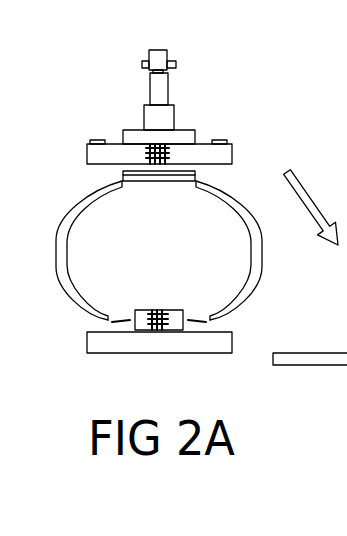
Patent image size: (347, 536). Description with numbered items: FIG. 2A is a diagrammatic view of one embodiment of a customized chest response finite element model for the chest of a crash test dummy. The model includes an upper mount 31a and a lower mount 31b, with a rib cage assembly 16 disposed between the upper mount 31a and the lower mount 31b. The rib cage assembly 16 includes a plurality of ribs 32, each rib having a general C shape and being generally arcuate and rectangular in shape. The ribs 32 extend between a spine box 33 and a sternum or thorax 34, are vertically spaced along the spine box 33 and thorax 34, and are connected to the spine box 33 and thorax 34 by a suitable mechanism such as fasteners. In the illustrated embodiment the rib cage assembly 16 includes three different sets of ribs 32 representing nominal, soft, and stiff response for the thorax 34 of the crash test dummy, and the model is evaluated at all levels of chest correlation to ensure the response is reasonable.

The rib cage assembly 16 is at (192, 216).
The upper mount 31a is at (120, 153).
The lower mount 31b is at (157, 343).
The rib 32 is at (256, 252).
The spine box 33 is at (143, 320).
The thorax 34 is at (131, 174).